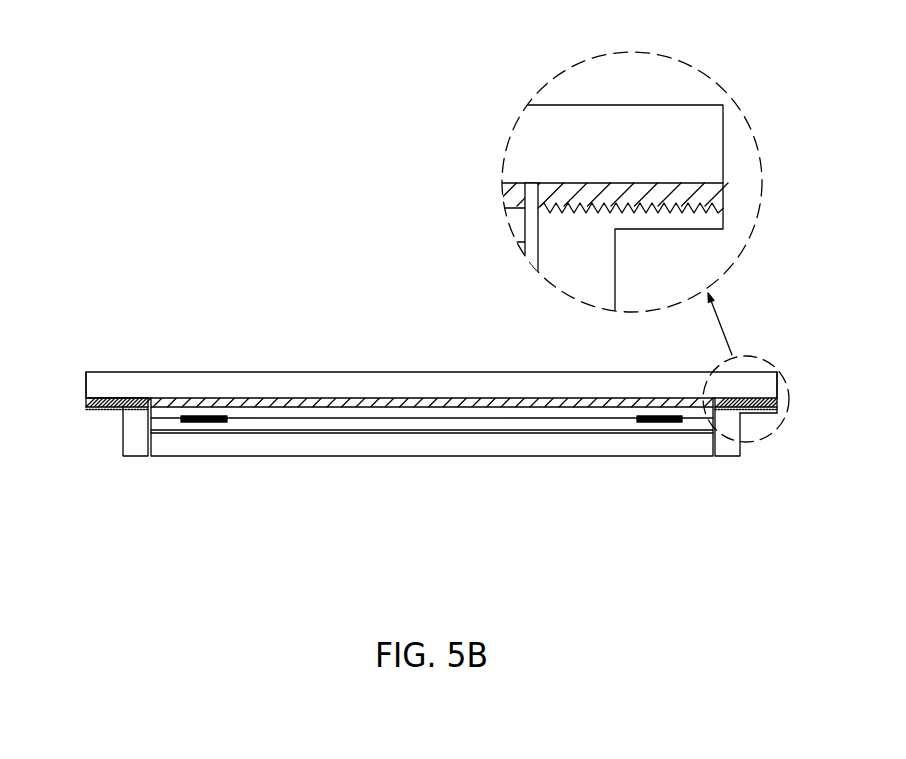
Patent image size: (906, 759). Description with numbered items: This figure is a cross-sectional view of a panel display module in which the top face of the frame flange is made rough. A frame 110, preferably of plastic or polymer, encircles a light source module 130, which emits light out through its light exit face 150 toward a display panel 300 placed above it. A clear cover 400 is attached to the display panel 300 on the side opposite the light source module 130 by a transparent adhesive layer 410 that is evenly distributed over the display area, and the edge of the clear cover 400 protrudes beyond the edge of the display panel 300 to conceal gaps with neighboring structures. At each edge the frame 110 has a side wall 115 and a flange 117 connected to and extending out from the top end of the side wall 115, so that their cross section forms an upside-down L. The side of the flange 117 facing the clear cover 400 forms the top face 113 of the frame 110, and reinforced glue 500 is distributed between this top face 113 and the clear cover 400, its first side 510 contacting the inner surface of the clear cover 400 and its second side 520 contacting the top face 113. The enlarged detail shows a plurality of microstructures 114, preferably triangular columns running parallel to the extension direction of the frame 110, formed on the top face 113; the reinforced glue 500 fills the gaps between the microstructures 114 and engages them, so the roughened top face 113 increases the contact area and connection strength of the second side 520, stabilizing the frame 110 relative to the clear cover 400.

The frame 110 is at (797, 475).
The top face 113 is at (722, 390).
The microstructures 114 is at (677, 213).
The side wall 115 is at (725, 456).
The flange 117 is at (760, 408).
The light source module 130 is at (416, 445).
The light exit face 150 is at (338, 432).
The display panel 300 is at (265, 408).
The clear cover 400 is at (577, 387).
The transparent adhesive layer 410 is at (473, 403).
The reinforced glue 500 is at (136, 409).
The first side 510 is at (130, 398).
The second side 520 is at (137, 413).